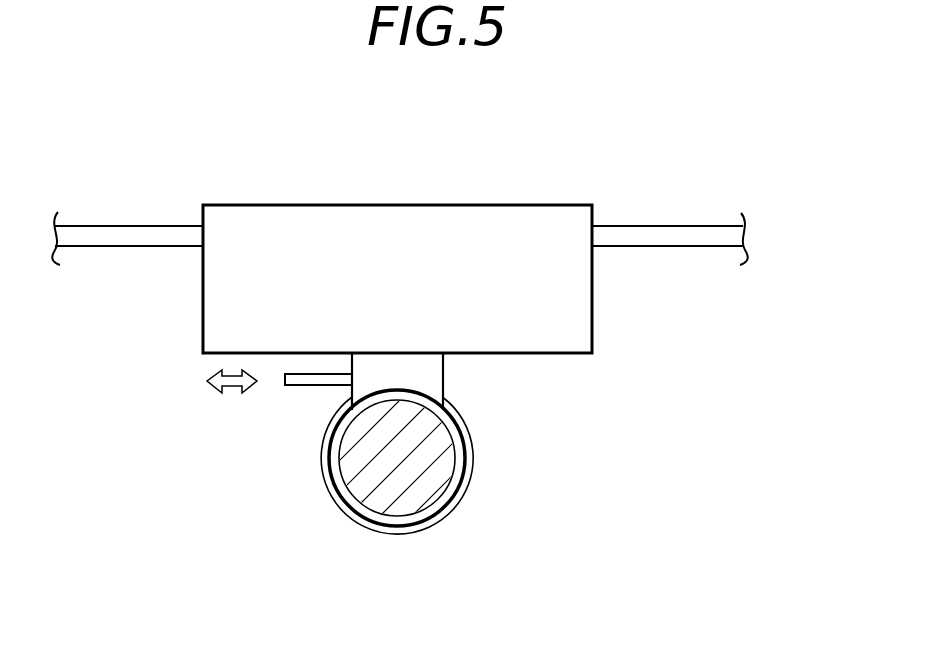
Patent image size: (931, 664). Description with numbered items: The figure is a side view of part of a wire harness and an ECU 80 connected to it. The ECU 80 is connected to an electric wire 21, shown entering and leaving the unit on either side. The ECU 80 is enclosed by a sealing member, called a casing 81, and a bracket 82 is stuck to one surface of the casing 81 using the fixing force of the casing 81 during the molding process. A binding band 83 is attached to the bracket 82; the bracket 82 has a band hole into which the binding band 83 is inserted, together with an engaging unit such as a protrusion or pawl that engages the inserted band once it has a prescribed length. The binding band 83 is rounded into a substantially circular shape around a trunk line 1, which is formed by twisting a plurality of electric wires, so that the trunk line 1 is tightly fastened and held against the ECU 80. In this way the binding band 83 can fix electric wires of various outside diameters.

The ECU 80 is at (667, 142).
The casing 81 is at (528, 205).
The electric wire 21 is at (123, 225).
The bracket 82 is at (427, 377).
The binding band 83 is at (300, 386).
The trunk line 1 is at (438, 462).